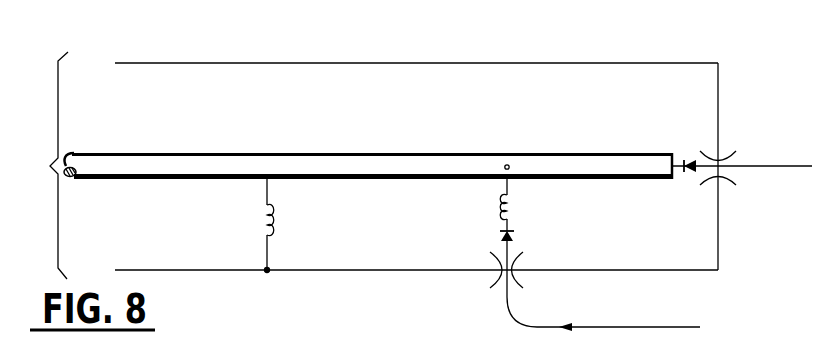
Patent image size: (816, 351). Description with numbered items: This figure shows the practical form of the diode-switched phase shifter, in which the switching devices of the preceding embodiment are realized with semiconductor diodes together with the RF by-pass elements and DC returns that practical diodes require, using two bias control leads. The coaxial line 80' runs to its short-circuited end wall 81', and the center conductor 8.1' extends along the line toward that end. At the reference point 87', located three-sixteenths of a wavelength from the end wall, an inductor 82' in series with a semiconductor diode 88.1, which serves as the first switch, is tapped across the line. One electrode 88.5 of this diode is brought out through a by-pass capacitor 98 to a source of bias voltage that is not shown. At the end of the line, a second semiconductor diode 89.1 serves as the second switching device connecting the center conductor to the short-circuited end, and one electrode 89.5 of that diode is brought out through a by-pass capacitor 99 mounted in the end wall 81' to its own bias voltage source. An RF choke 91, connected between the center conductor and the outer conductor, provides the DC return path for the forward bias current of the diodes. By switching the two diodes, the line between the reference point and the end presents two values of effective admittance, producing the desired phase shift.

The coaxial line 80' is at (416, 145).
The end wall 81' is at (745, 166).
The tube 8.1' is at (368, 145).
The reference point 87' is at (534, 142).
The electrode 89.5 is at (750, 168).
The semiconductor diode 89.1 is at (692, 173).
The by-pass capacitor 99 is at (736, 160).
The RF choke 91 is at (273, 221).
The inductor 82' is at (528, 205).
The semiconductor diode 88.1 is at (514, 235).
The by-pass capacitor 98 is at (502, 286).
The electrode 88.5 is at (510, 297).